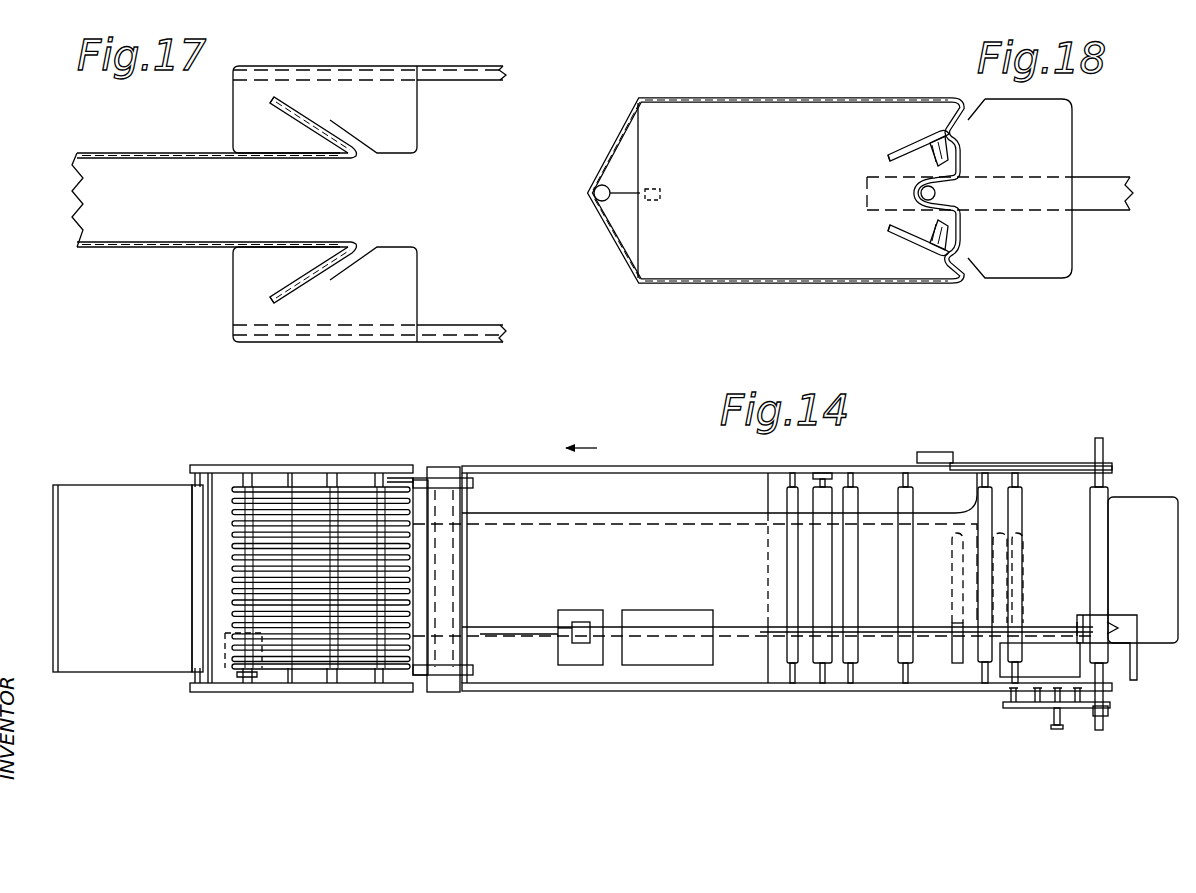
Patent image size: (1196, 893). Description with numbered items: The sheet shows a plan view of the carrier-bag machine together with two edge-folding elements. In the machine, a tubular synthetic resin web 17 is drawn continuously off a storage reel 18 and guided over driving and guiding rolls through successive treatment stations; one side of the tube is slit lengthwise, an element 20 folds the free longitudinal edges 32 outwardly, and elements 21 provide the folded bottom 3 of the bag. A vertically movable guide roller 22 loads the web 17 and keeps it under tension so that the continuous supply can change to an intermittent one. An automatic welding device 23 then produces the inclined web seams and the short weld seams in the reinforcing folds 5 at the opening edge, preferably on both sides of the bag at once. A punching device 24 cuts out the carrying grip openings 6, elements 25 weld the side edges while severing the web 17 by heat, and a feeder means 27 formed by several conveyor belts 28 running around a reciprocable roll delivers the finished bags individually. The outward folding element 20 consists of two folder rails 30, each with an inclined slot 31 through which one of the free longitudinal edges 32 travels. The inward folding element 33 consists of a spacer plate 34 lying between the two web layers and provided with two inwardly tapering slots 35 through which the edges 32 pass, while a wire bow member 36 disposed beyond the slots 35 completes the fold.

In FIG. 14, the folded bottom 3 is at (632, 517).
In FIG. 14, the reinforcing folds 5 is at (778, 628).
In FIG. 14, the carrying grip openings 6 is at (490, 634).
In FIG. 17, the tubular synthetic resin web 17 is at (122, 154).
In FIG. 18, the tubular synthetic resin web 17 is at (681, 284).
In FIG. 14, the tubular synthetic resin web 17 is at (1030, 512).
In FIG. 14, the storage reel 18 is at (1130, 507).
In FIG. 17, the folding-out element 20 is at (180, 263).
In FIG. 14, the folding-out element 20 is at (1122, 610).
In FIG. 14, the bottom-folding elements 21 is at (978, 500).
In FIG. 14, the guide roller 22 is at (821, 653).
In FIG. 14, the automatic welding device 23 is at (667, 665).
In FIG. 14, the punching device 24 is at (573, 667).
In FIG. 14, the side-edge welding elements 25 is at (448, 657).
In FIG. 14, the feeder means 27 is at (307, 671).
In FIG. 14, the conveyor belts 28 is at (393, 655).
In FIG. 17, the folder rails 30 is at (403, 140).
In FIG. 17, the inclined slot 31 is at (307, 117).
In FIG. 17, the free longitudinal edges 32 is at (268, 100).
In FIG. 18, the free longitudinal edges 32 is at (893, 225).
In FIG. 18, the folding-in element 33 is at (1020, 289).
In FIG. 18, the spacer plate 34 is at (737, 124).
In FIG. 18, the tapering slots 35 is at (963, 122).
In FIG. 18, the wire bow member 36 is at (932, 141).